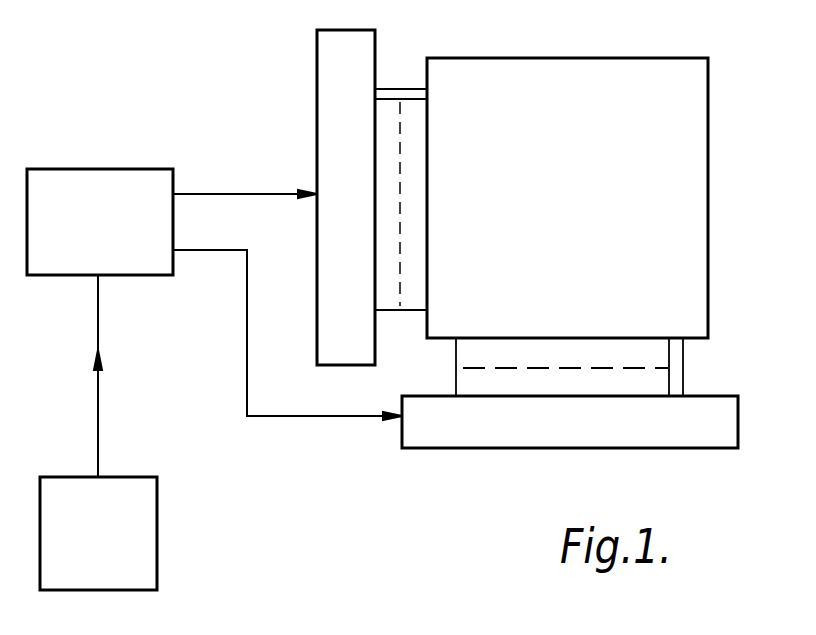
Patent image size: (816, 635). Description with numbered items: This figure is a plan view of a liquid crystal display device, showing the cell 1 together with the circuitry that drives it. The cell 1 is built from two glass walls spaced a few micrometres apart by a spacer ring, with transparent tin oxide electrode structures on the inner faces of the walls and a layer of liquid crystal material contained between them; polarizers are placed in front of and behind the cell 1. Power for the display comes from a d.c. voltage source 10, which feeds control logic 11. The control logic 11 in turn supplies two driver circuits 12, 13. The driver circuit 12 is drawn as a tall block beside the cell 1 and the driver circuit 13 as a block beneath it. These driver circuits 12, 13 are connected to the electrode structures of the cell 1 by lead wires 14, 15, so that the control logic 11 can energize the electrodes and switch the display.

The cell 1 is at (614, 88).
The d.c. voltage source 10 is at (157, 528).
The control logic 11 is at (86, 170).
The driver circuit 12 is at (320, 126).
The driver circuit 13 is at (527, 448).
The lead wire 14 is at (401, 88).
The lead wire 15 is at (683, 367).